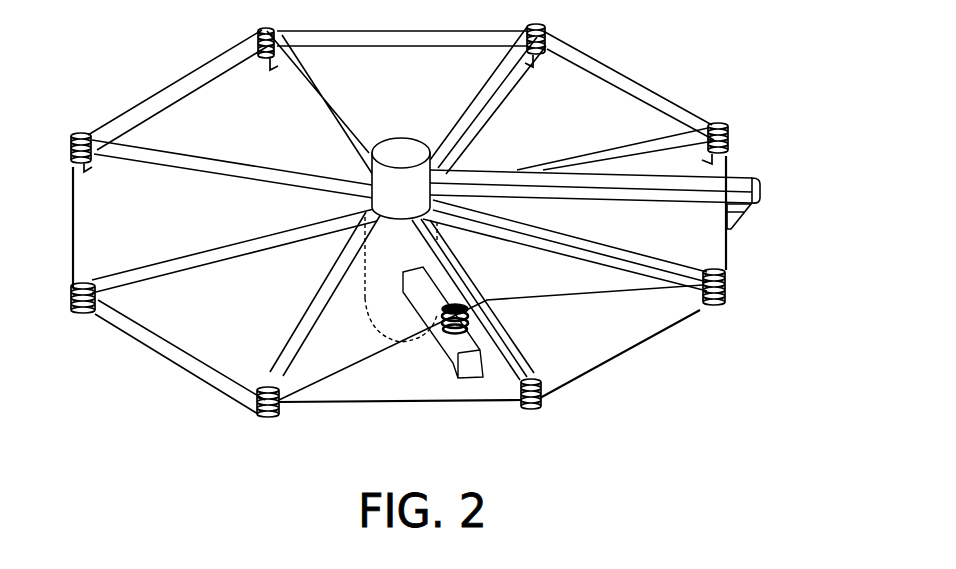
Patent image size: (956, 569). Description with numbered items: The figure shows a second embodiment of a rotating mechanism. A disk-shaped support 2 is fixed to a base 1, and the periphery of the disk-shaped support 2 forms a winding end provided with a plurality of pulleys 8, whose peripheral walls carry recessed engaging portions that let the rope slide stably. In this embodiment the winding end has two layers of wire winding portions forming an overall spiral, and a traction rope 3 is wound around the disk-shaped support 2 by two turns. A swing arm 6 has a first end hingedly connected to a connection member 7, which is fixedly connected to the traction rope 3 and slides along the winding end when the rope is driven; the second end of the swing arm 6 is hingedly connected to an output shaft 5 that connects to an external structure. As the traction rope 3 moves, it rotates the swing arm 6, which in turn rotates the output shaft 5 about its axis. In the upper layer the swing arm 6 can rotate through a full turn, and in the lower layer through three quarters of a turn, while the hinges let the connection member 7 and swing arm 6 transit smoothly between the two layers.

The base 1 is at (443, 295).
The disk-shaped support 2 is at (327, 113).
The traction rope 3 is at (190, 362).
The output shaft 5 is at (401, 178).
The swing arm 6 is at (712, 186).
The connection member 7 is at (741, 212).
The pulleys 8 is at (729, 301).